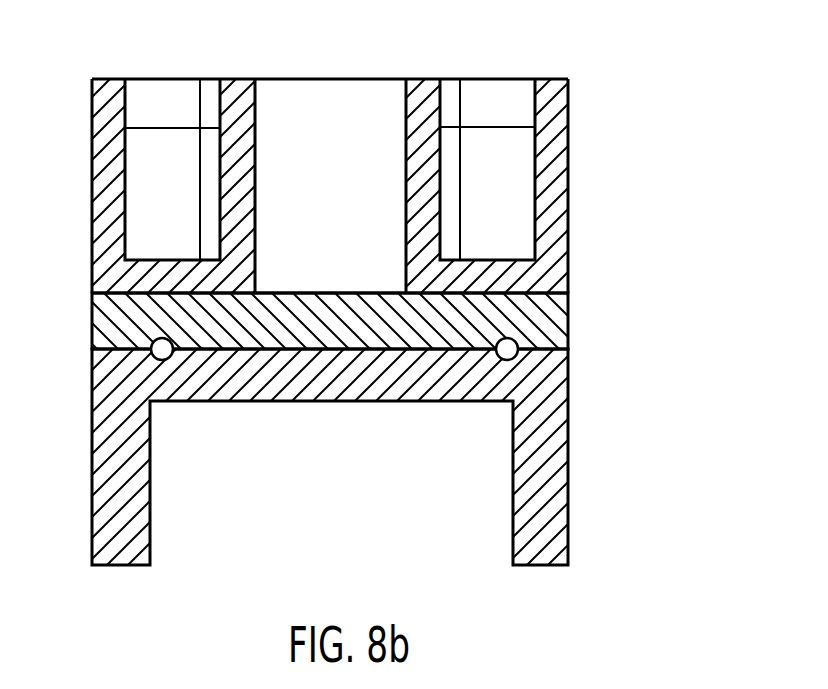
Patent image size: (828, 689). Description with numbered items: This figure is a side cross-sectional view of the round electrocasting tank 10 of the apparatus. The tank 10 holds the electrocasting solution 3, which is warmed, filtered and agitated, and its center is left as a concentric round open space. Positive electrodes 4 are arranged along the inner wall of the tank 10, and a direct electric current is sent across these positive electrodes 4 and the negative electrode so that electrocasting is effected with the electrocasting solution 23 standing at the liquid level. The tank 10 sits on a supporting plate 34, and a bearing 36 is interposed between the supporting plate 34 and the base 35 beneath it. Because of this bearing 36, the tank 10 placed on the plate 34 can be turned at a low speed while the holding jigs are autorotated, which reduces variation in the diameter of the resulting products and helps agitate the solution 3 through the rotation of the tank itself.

The electrocasting solution 3 is at (518, 170).
The positive electrodes 4 is at (211, 86).
The electrocasting tank 10 is at (568, 247).
The electrocasting solution 23 is at (499, 127).
The supporting plate 34 is at (568, 315).
The base 35 is at (568, 470).
The bearing 36 is at (513, 356).